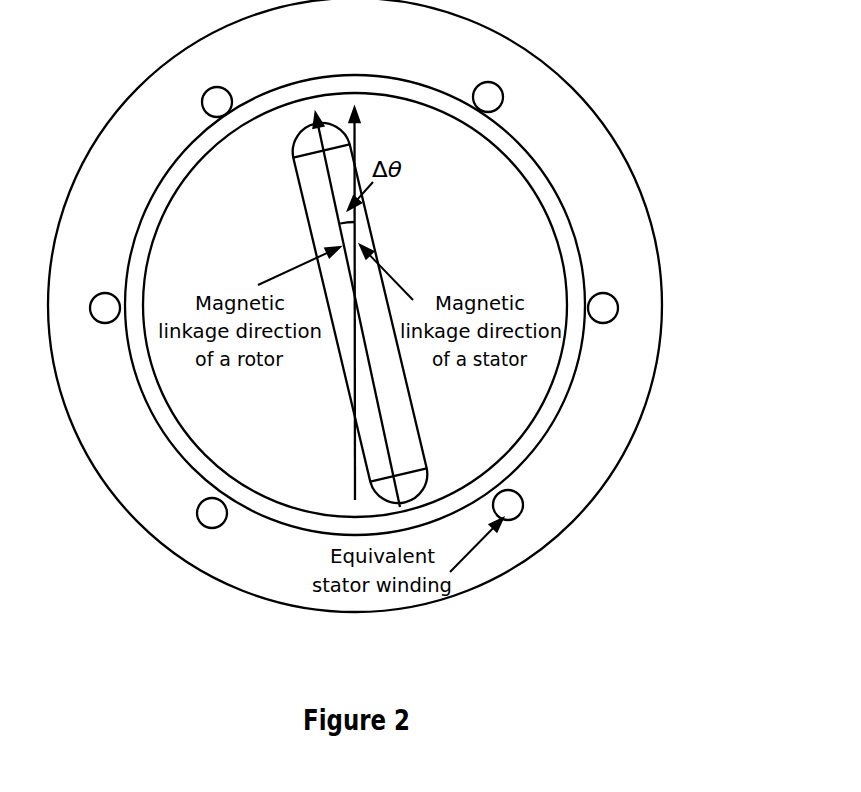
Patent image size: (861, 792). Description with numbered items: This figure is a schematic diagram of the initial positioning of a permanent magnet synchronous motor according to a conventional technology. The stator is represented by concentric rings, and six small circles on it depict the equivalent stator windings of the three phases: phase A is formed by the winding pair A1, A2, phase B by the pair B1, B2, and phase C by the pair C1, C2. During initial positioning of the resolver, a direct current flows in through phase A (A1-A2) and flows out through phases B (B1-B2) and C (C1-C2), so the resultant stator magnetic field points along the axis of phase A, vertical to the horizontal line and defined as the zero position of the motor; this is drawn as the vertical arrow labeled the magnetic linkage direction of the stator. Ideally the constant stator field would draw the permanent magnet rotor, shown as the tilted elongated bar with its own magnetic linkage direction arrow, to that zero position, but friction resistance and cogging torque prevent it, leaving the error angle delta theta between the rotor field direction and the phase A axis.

The phase A terminal A1 is at (620, 308).
The phase A terminal A2 is at (96, 294).
The phase B terminal B1 is at (227, 90).
The phase B terminal B2 is at (523, 513).
The phase C terminal C1 is at (204, 527).
The phase C terminal C2 is at (497, 89).